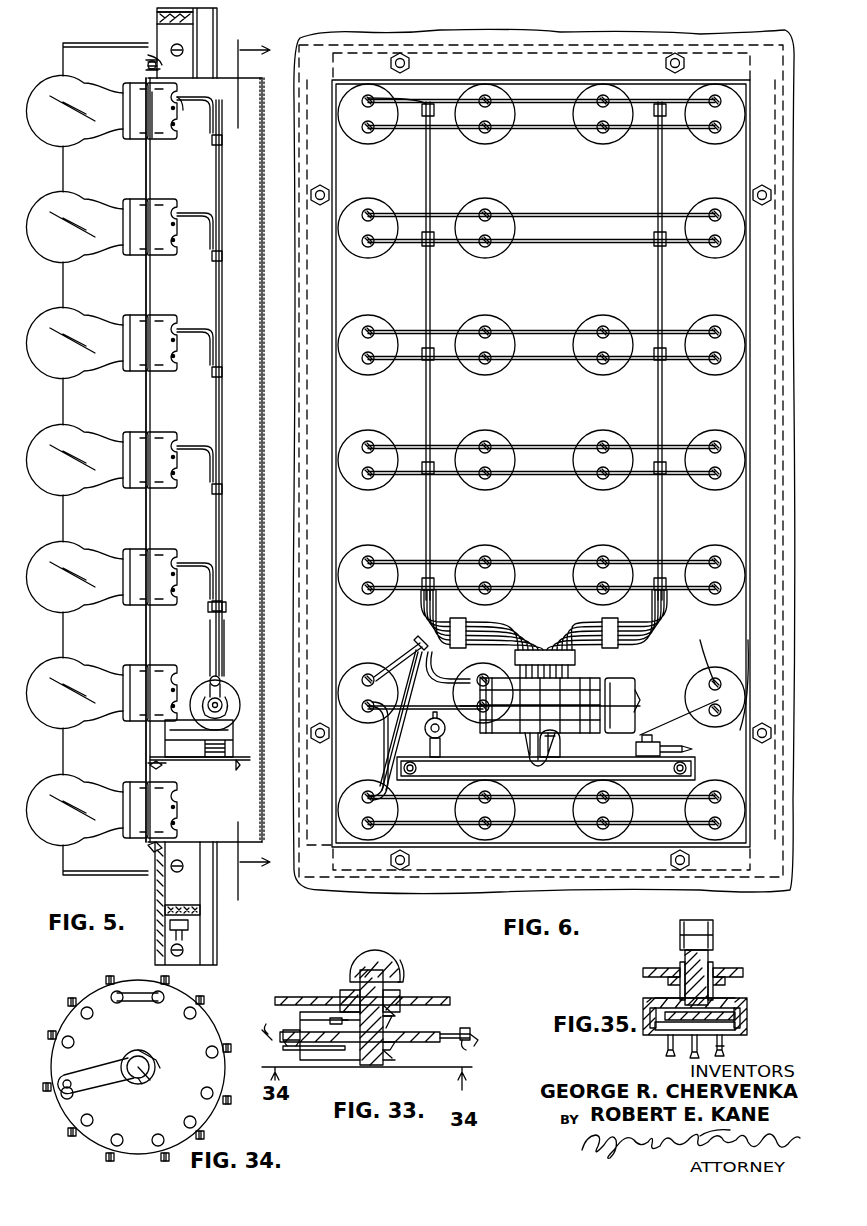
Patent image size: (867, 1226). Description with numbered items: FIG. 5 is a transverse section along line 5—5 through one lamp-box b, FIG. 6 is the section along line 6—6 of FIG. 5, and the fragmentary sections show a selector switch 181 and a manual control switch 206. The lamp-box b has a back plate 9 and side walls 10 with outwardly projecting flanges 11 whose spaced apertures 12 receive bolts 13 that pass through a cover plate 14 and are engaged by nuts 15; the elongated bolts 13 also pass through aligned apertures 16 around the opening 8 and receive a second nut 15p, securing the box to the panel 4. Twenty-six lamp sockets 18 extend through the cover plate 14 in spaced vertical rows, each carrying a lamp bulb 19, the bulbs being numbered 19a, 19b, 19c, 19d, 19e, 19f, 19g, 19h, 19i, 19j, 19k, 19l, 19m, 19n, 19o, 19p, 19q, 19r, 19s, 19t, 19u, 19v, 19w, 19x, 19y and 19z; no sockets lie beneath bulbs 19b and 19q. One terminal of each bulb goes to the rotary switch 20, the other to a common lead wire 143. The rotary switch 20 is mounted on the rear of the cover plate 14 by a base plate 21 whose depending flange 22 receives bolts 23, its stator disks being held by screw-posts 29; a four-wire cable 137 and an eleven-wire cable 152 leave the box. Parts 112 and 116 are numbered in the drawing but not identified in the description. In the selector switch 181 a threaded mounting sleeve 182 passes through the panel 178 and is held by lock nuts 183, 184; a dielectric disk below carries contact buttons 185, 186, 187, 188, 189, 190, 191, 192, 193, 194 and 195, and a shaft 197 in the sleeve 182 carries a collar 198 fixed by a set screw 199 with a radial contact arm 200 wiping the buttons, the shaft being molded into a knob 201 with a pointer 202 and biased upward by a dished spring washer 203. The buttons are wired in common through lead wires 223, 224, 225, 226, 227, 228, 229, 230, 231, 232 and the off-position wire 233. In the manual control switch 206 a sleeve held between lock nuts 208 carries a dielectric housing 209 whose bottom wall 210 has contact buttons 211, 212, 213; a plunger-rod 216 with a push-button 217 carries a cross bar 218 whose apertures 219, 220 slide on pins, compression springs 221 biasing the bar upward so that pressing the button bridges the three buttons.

In FIG. 5, the panel 4 is at (155, 908).
In FIG. 6, the panel 4 is at (493, 40).
In FIG. 5, the serrated clamp strip 5 is at (193, 14).
In FIG. 5, the screw / section line 6 is at (183, 50).
In FIG. 5, the opening 8 is at (148, 848).
In FIG. 5, the back plate 9 is at (260, 356).
In FIG. 5, the side walls 10 is at (262, 92).
In FIG. 6, the side walls 10 is at (334, 534).
In FIG. 5, the flanges 11 is at (148, 62).
In FIG. 6, the flanges 11 is at (520, 52).
In FIG. 5, the apertures 12 is at (168, 52).
In FIG. 5, the bolts 13 is at (146, 64).
In FIG. 5, the cover plate 14 is at (146, 164).
In FIG. 5, the nuts 15 is at (158, 56).
In FIG. 5, the second nut 15p is at (180, 98).
In FIG. 6, the second nut 15p is at (405, 52).
In FIG. 5, the apertures 16 is at (159, 115).
In FIG. 5, the electric lamp sockets 18 is at (160, 142).
In FIG. 6, the electric lamp sockets 18 is at (660, 134).
In FIG. 5, the lamp bulb 19 is at (56, 380).
In FIG. 6, the lamp bulb 19a is at (712, 142).
In FIG. 5, the lamp bulb 19b is at (54, 78).
In FIG. 6, the lamp bulb 19b is at (606, 142).
In FIG. 6, the lamp bulb 19c is at (484, 142).
In FIG. 6, the lamp bulb 19d is at (372, 140).
In FIG. 5, the lamp bulb 19e is at (46, 262).
In FIG. 6, the lamp bulb 19e is at (368, 606).
In FIG. 6, the lamp bulb 19f is at (512, 216).
In FIG. 6, the lamp bulb 19g is at (380, 206).
In FIG. 6, the lamp bulb 19h is at (708, 372).
In FIG. 5, the lamp bulb 19i is at (70, 315).
In FIG. 6, the lamp bulb 19i is at (596, 372).
In FIG. 6, the lamp bulb 19j is at (508, 328).
In FIG. 6, the lamp bulb 19k is at (376, 372).
In FIG. 6, the lamp bulb 19l is at (710, 486).
In FIG. 5, the lamp bulb 19m is at (72, 426).
In FIG. 6, the lamp bulb 19m is at (604, 488).
In FIG. 6, the lamp bulb 19n is at (508, 484).
In FIG. 6, the lamp bulb 19o is at (712, 256).
In FIG. 6, the lamp bulb 19p is at (712, 606).
In FIG. 5, the lamp bulb 19q is at (78, 608).
In FIG. 6, the lamp bulb 19q is at (376, 486).
In FIG. 6, the lamp bulb 19r is at (500, 556).
In FIG. 6, the lamp bulb 19s is at (592, 556).
In FIG. 5, the lamp bulb 19t is at (40, 728).
In FIG. 6, the lamp bulb 19t is at (724, 668).
In FIG. 6, the lamp bulb 19u is at (466, 680).
In FIG. 6, the lamp bulb 19v is at (364, 726).
In FIG. 6, the lamp bulb 19w is at (700, 804).
In FIG. 5, the lamp bulb 19x is at (42, 845).
In FIG. 6, the lamp bulb 19x is at (404, 808).
In FIG. 6, the lamp bulb 19y is at (518, 806).
In FIG. 6, the lamp bulb 19z is at (584, 816).
In FIG. 5, the rotary switch 20 is at (233, 684).
In FIG. 6, the rotary switch 20 is at (607, 673).
In FIG. 5, the base plate 21 is at (222, 768).
In FIG. 6, the base plate 21 is at (504, 760).
In FIG. 6, the depending flange 22 is at (642, 782).
In FIG. 5, the bolts 23 is at (165, 768).
In FIG. 6, the screw-posts 29 is at (417, 768).
In FIG. 6, the switch housing end 112 is at (636, 688).
In FIG. 6, the four-wire cable 137 is at (694, 749).
In FIG. 5, the common lead wire 143 is at (175, 242).
In FIG. 6, the common lead wire 143 is at (528, 134).
In FIG. 6, the eleven wire cable 152 is at (548, 768).
In FIG. 33, the panel 178 is at (298, 997).
In FIG. 35, the panel 178 is at (645, 966).
In FIG. 33, the selector switch 181 is at (462, 1019).
In FIG. 34, the selector switch 181 is at (233, 1029).
In FIG. 33, the mounting sleeve 182 is at (396, 1046).
In FIG. 33, the lock nut 183 is at (398, 1000).
In FIG. 33, the lock nut 184 is at (394, 1012).
In FIG. 34, the contact button 185 is at (80, 1013).
In FIG. 34, the contact button 186 is at (62, 1046).
In FIG. 34, the contact button 187 is at (62, 1100).
In FIG. 34, the contact button 188 is at (80, 1124).
In FIG. 34, the contact button 189 is at (110, 1146).
In FIG. 34, the contact button 190 is at (152, 1146).
In FIG. 34, the contact button 191 is at (198, 1120).
In FIG. 34, the contact button 192 is at (214, 1090).
In FIG. 33, the contact button 193 is at (468, 1030).
In FIG. 34, the contact button 193 is at (210, 1058).
In FIG. 34, the contact button 194 is at (188, 1020).
In FIG. 34, the contact button 195 is at (160, 1004).
In FIG. 34, the contact bridge 116 is at (115, 1004).
In FIG. 33, the shaft 197 is at (398, 1050).
In FIG. 34, the shaft 197 is at (140, 1084).
In FIG. 33, the collar 198 is at (356, 1070).
In FIG. 34, the collar 198 is at (122, 1060).
In FIG. 33, the set screw 199 is at (398, 1050).
In FIG. 34, the set screw 199 is at (142, 1057).
In FIG. 33, the radial contact arm 200 is at (318, 1052).
In FIG. 34, the radial contact arm 200 is at (104, 1088).
In FIG. 33, the dielectric knob 201 is at (398, 958).
In FIG. 33, the radial pointer 202 is at (405, 972).
In FIG. 33, the dished spring washer 203 is at (345, 992).
In FIG. 35, the manual control switch 206 is at (743, 947).
In FIG. 35, the lock nuts 208 is at (726, 972).
In FIG. 35, the housing 209 is at (740, 1018).
In FIG. 35, the bottom wall 210 is at (726, 1040).
In FIG. 35, the contact button 211 is at (725, 1052).
In FIG. 33, the contact button 212 is at (330, 1020).
In FIG. 35, the contact button 212 is at (691, 1048).
In FIG. 35, the contact button 213 is at (666, 1044).
In FIG. 35, the plunger-rod 216 is at (684, 954).
In FIG. 35, the push-button 217 is at (702, 922).
In FIG. 35, the cross bar 218 is at (660, 998).
In FIG. 35, the aperture 219 is at (643, 1004).
In FIG. 35, the aperture 220 is at (736, 1004).
In FIG. 35, the compression springs 221 is at (748, 1028).
In FIG. 34, the lead wire 223 is at (74, 996).
In FIG. 34, the lead wire 224 is at (46, 1034).
In FIG. 33, the lead wire 225 is at (258, 1040).
In FIG. 34, the lead wire 225 is at (44, 1090).
In FIG. 34, the lead wire 226 is at (72, 1138).
In FIG. 34, the lead wire 227 is at (132, 1108).
In FIG. 34, the lead wire 228 is at (175, 1164).
In FIG. 34, the lead wire 229 is at (204, 1136).
In FIG. 34, the lead wire 230 is at (231, 1100).
In FIG. 33, the lead wire 231 is at (478, 1044).
In FIG. 34, the lead wire 231 is at (232, 1050).
In FIG. 34, the lead wire 232 is at (206, 996).
In FIG. 34, the off-position wire 233 is at (110, 976).
In FIG. 5, the lamp-box b is at (68, 158).